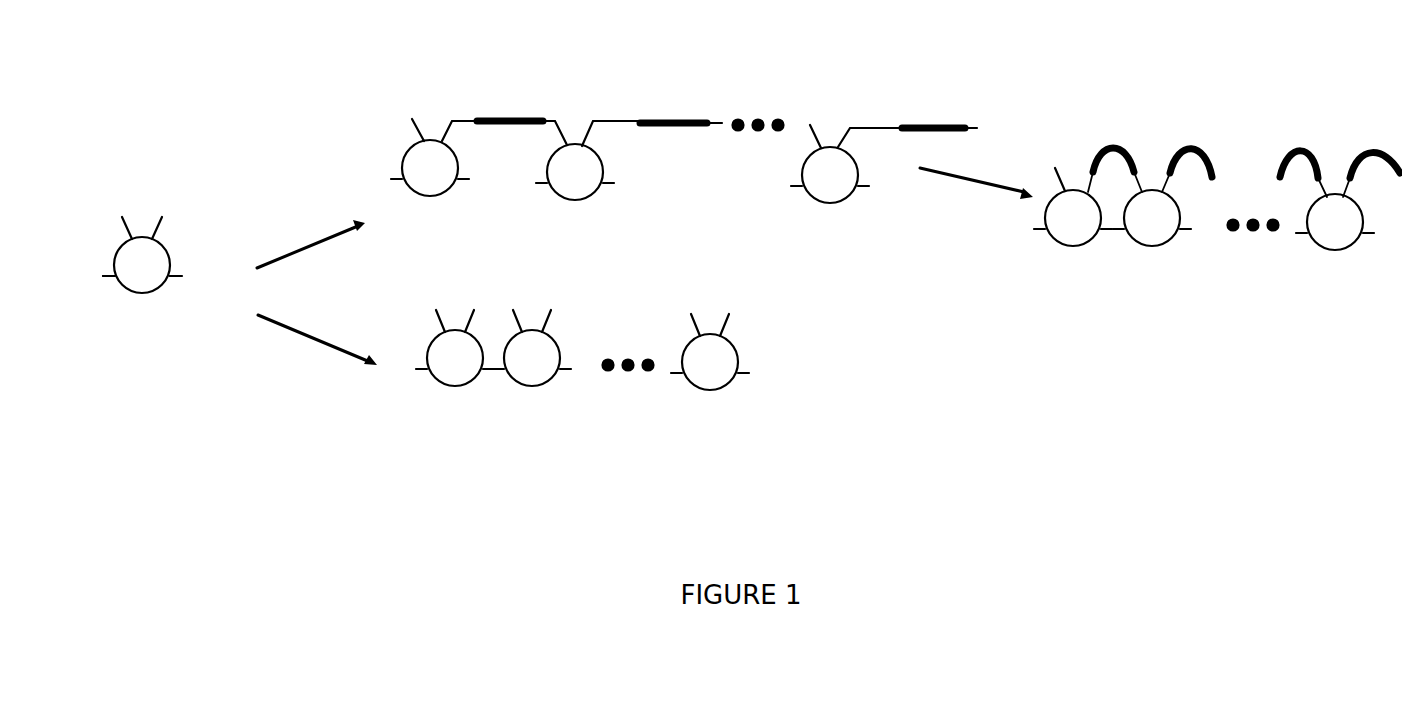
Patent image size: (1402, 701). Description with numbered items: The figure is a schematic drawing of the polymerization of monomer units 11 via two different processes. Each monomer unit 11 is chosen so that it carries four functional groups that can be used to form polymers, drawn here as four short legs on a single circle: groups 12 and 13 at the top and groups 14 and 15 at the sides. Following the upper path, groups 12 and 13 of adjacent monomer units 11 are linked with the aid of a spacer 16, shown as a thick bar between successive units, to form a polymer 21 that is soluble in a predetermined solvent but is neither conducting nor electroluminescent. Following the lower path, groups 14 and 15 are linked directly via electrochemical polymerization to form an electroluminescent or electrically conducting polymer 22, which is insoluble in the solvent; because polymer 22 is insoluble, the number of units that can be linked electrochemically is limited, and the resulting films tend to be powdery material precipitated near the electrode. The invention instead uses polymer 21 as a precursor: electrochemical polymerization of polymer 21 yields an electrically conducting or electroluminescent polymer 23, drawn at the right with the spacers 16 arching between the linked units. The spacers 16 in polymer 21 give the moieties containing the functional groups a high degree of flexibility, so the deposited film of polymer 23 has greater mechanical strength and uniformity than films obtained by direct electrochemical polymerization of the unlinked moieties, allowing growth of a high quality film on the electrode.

The monomer unit 11 is at (738, 281).
The functional group 12 is at (127, 217).
The functional group 13 is at (165, 221).
The functional group 14 is at (109, 277).
The functional group 15 is at (178, 279).
The spacer 16 is at (1379, 154).
The polymer 21 is at (402, 78).
The polymer 22 is at (407, 453).
The polymer 23 is at (1055, 278).